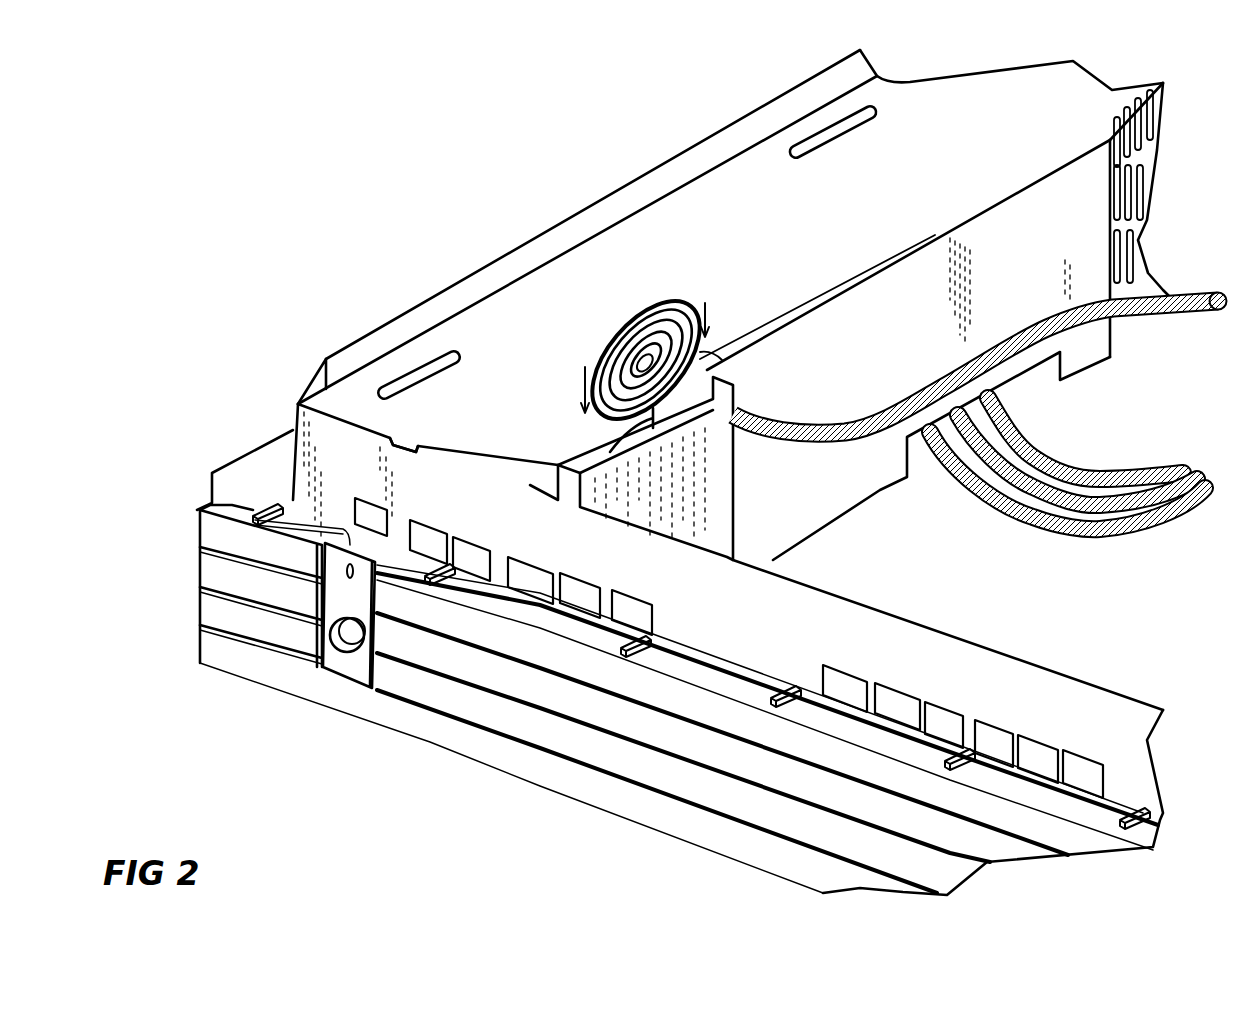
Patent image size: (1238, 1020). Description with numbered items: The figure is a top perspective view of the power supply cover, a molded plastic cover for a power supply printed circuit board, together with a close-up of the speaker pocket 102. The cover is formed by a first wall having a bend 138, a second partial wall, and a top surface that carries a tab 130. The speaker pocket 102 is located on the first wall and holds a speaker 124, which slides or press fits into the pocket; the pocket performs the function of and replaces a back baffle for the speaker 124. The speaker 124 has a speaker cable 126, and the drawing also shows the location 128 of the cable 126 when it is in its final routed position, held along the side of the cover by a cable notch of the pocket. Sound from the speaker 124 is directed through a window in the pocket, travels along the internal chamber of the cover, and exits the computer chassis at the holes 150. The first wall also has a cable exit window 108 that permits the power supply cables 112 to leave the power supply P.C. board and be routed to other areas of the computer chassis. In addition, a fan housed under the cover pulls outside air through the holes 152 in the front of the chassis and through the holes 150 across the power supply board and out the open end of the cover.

The speaker pocket 102 is at (737, 458).
The power supply P.C. board cable exit window 108 is at (1025, 390).
The power supply cables 112 is at (1083, 547).
The speaker 124 is at (641, 302).
The speaker cable 126 is at (836, 280).
The location of cable in final position 128 is at (880, 407).
The tab 130 is at (408, 450).
The bend 138 is at (1092, 128).
The holes 150 is at (652, 607).
The holes 152 is at (1078, 757).